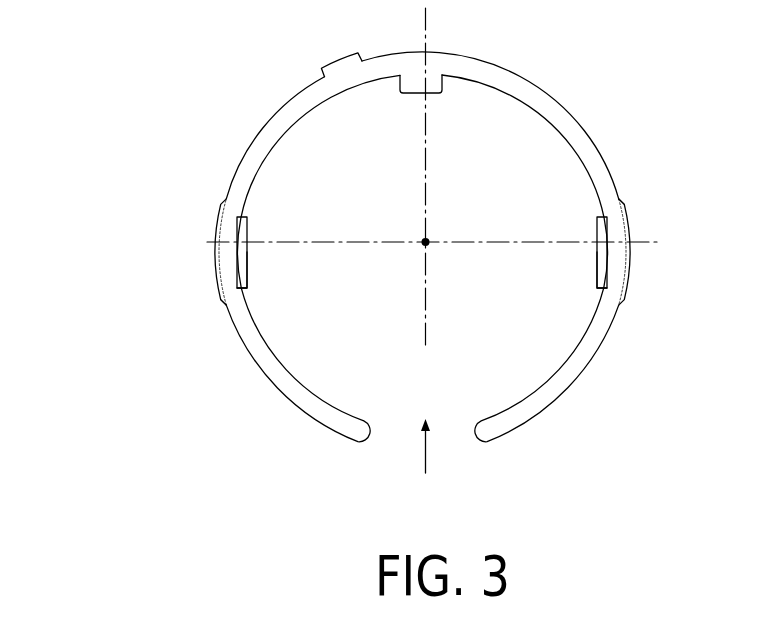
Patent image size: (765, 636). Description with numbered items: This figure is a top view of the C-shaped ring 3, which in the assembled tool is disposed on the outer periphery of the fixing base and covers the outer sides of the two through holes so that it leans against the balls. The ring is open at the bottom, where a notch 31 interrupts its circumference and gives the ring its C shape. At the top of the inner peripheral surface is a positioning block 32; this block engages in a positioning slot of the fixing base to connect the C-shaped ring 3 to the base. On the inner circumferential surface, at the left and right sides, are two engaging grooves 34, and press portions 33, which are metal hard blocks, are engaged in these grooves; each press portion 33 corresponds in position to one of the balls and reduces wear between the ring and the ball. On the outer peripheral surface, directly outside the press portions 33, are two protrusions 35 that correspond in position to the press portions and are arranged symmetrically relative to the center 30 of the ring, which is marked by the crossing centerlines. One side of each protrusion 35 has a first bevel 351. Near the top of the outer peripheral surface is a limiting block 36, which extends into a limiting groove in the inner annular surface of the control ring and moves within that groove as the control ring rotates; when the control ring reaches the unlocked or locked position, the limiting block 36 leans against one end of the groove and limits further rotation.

The C-shaped ring 3 is at (50, 116).
The center 30 is at (428, 246).
The notch 31 is at (425, 464).
The positioning block 32 is at (435, 84).
The press portion 33 is at (244, 234).
The engaging groove 34 is at (246, 268).
The protrusion 35 is at (219, 263).
The first bevel 351 is at (227, 306).
The limiting block 36 is at (342, 59).